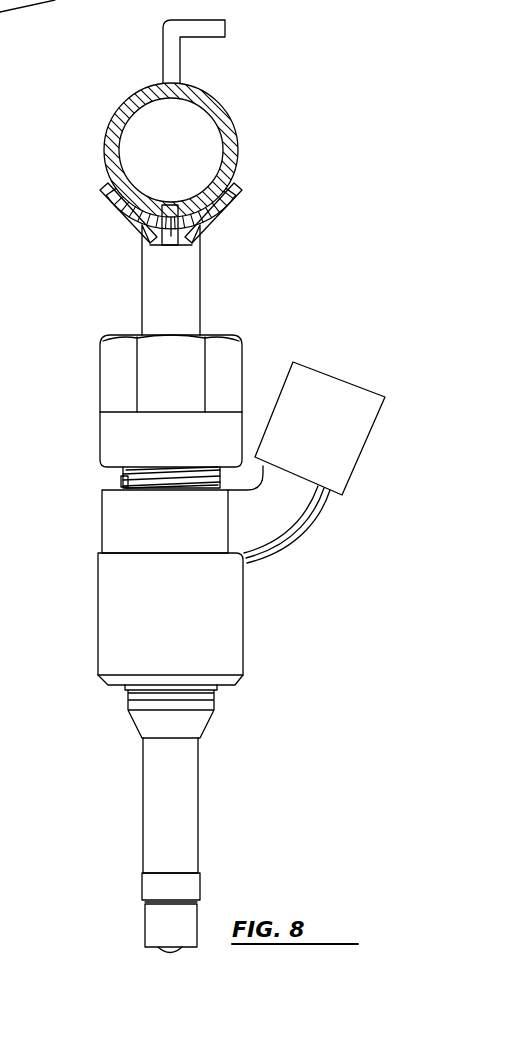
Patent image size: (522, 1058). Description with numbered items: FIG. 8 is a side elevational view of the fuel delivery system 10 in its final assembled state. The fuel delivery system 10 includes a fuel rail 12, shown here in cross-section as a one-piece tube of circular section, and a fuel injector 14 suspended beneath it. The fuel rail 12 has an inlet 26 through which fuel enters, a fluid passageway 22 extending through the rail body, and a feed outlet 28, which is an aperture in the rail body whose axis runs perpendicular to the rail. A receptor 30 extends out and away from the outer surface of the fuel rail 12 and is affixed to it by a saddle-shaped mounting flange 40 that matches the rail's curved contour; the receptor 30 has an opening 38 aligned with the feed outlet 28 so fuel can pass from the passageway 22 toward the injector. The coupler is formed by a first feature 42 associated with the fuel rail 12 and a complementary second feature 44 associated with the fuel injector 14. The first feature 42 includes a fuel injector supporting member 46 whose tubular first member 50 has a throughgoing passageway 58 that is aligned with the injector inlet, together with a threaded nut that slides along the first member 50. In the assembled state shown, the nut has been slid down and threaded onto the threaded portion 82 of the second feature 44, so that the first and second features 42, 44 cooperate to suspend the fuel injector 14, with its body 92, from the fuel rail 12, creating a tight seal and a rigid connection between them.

The fuel delivery system 10 is at (48, 145).
The fuel rail 12 is at (213, 110).
The fuel injector 14 is at (97, 632).
The fluid passageway 22 is at (186, 144).
The inlet 26 is at (193, 23).
The feed outlet 28 is at (172, 212).
The receptor 30 is at (90, 205).
The opening 38 is at (172, 228).
The mounting flange 40 is at (230, 212).
The first feature 42 is at (252, 265).
The second feature 44 is at (92, 465).
The fuel injector supporting member 46 is at (155, 232).
The first member 50 is at (180, 292).
The throughgoing passageway 58 is at (193, 240).
The threaded portion 82 is at (122, 482).
The body 92 is at (202, 617).